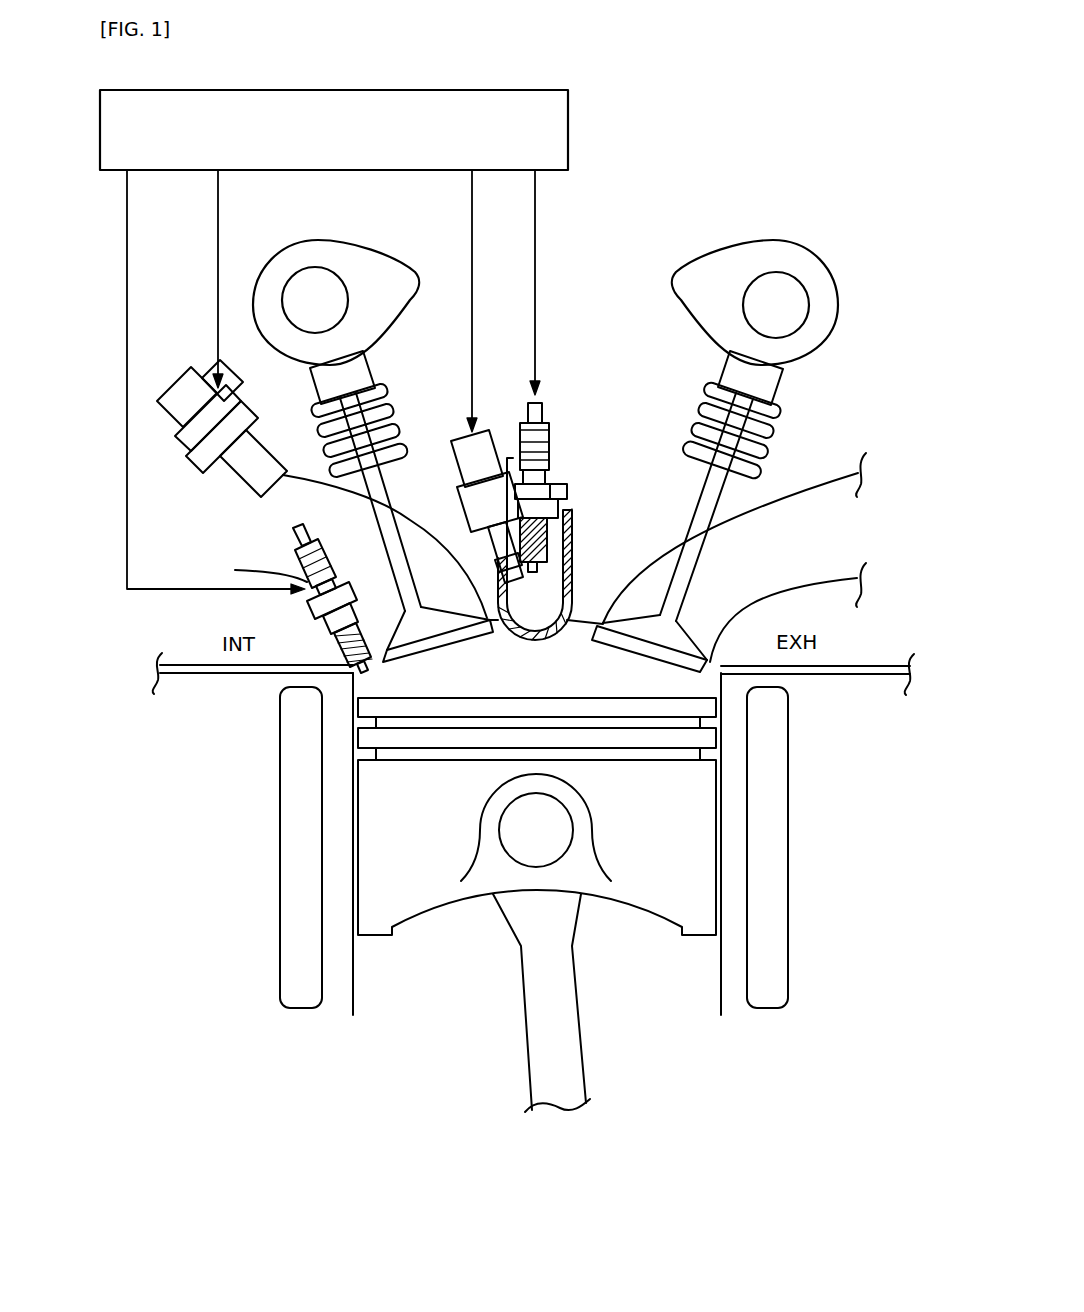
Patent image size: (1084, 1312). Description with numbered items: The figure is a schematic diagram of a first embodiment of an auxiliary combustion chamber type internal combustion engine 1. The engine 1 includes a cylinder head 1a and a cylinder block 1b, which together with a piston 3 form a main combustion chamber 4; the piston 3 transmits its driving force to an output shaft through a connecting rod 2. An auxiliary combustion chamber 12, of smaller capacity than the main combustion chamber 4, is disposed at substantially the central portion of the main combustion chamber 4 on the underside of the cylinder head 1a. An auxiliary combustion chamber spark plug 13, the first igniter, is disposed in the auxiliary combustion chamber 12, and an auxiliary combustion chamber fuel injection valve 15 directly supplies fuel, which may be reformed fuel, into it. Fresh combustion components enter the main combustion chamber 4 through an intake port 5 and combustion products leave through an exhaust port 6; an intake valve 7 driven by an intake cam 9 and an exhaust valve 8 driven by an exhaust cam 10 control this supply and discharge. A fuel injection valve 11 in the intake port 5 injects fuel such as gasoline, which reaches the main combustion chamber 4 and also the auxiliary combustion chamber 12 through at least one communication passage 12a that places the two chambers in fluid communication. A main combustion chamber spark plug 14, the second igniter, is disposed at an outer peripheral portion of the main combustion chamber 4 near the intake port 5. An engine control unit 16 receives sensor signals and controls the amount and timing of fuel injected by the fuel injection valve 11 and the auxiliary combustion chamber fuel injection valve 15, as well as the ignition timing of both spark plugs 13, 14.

The internal combustion engine 1 is at (223, 1066).
The cylinder head 1a is at (533, 660).
The cylinder block 1b is at (590, 847).
The connecting rod 2 is at (547, 1050).
The piston 3 is at (652, 894).
The main combustion chamber 4 is at (546, 652).
The intake port 5 is at (352, 546).
The exhaust port 6 is at (734, 557).
The intake valve 7 is at (417, 628).
The exhaust valve 8 is at (672, 638).
The intake cam 9 is at (366, 258).
The exhaust cam 10 is at (722, 258).
The fuel injection valve 11 is at (190, 387).
The auxiliary combustion chamber 12 is at (548, 607).
The communication passage 12a is at (557, 630).
The auxiliary combustion chamber spark plug 13 is at (548, 472).
The main combustion chamber spark plug 14 is at (327, 603).
The auxiliary combustion chamber fuel injection valve 15 is at (487, 493).
The engine control unit 16 is at (568, 125).